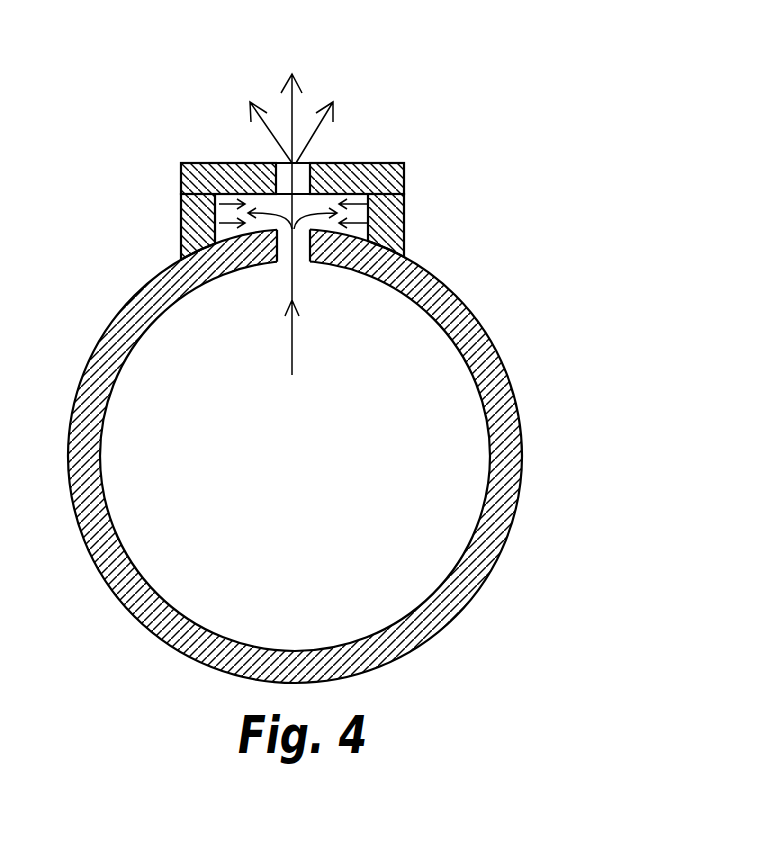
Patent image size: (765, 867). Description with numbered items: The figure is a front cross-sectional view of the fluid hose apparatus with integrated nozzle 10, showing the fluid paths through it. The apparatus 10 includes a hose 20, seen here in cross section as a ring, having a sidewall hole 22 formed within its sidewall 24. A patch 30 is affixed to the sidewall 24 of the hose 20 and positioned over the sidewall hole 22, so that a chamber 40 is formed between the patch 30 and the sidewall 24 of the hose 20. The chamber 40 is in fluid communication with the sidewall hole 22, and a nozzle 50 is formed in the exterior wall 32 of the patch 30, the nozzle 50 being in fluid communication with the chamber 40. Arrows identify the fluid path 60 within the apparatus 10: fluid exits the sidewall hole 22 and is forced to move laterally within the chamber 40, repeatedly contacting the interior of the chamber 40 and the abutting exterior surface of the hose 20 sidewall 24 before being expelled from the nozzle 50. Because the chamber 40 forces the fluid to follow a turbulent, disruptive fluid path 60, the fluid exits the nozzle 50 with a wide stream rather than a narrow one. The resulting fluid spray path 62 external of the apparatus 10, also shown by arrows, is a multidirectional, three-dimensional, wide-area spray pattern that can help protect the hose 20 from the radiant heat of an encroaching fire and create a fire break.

The fluid hose apparatus with integrated nozzle 10 is at (361, 350).
The hose 20 is at (346, 455).
The sidewall hole 22 is at (288, 263).
The sidewall 24 is at (498, 380).
The patch 30 is at (404, 176).
The exterior wall 32 is at (227, 163).
The chamber 40 is at (364, 163).
The nozzle 50 is at (302, 162).
The fluid path 60 is at (292, 340).
The fluid spray path 62 is at (383, 73).